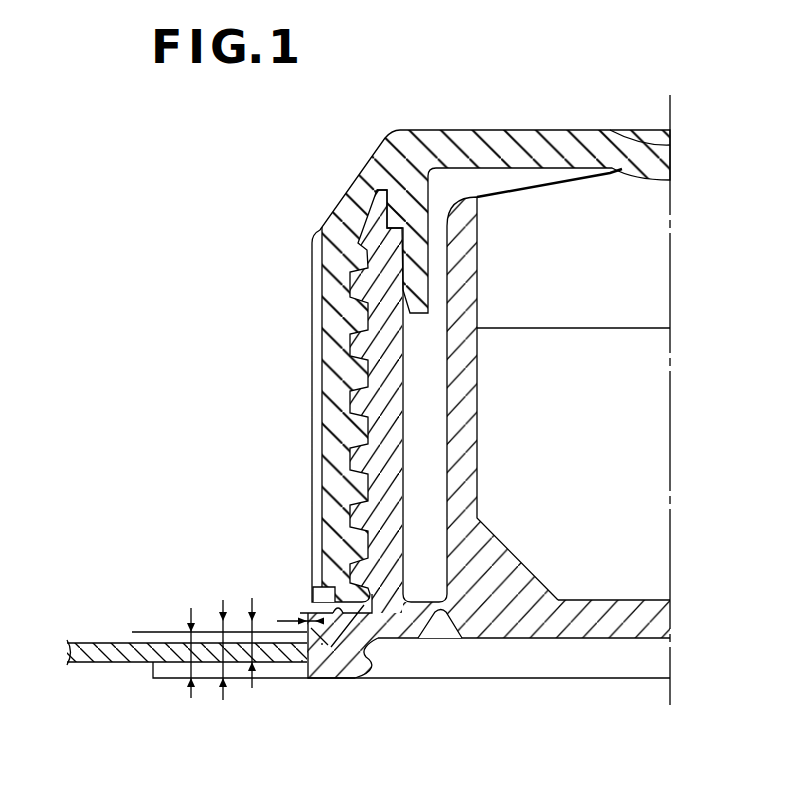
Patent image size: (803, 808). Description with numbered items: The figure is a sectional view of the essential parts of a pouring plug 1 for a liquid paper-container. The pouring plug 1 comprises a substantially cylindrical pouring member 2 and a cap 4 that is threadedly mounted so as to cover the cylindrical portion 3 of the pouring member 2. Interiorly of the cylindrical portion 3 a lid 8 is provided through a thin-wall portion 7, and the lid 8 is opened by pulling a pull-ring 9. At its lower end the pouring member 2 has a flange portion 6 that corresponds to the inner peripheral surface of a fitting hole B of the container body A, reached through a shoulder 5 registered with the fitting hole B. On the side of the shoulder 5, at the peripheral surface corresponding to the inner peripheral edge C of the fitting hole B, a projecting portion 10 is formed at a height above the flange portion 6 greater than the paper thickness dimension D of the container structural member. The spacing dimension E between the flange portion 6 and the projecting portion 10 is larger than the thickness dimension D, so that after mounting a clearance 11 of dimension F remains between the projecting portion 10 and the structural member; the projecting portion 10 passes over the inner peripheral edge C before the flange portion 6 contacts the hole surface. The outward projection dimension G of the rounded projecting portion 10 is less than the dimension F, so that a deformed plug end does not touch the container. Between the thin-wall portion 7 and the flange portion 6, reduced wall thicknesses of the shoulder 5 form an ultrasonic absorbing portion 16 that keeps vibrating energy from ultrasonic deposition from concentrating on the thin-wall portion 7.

The pouring plug 1 is at (268, 357).
The pouring member 2 is at (407, 533).
The cylindrical portion 3 is at (397, 402).
The cap 4 is at (312, 258).
The shoulder 5 is at (338, 652).
The flange portion 6 is at (172, 678).
The thin-wall portion 7 is at (440, 613).
The lid 8 is at (625, 613).
The pull-ring 9 is at (645, 268).
The projecting portion 10 is at (298, 617).
The clearance 11 is at (275, 660).
The ultrasonic absorbing portion 16 is at (382, 641).
The container body A is at (92, 640).
The fitting hole B is at (302, 662).
The inner peripheral edge C is at (322, 645).
The thickness dimension D is at (205, 688).
The spacing dimension E is at (240, 682).
The clearance dimension F is at (245, 633).
The projection dimension G is at (302, 617).